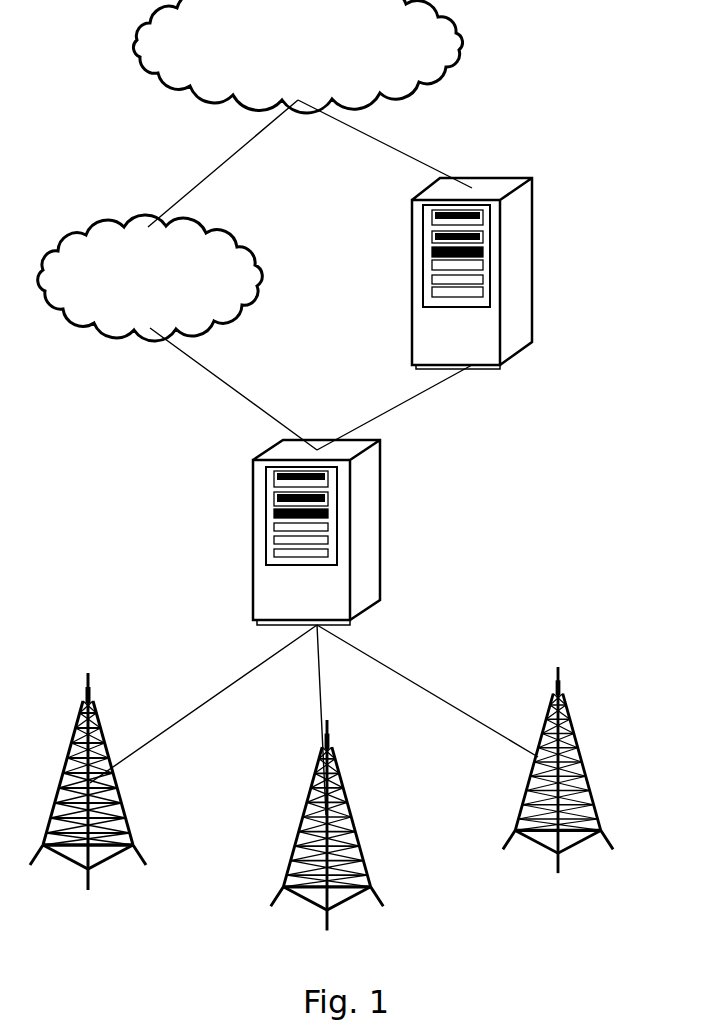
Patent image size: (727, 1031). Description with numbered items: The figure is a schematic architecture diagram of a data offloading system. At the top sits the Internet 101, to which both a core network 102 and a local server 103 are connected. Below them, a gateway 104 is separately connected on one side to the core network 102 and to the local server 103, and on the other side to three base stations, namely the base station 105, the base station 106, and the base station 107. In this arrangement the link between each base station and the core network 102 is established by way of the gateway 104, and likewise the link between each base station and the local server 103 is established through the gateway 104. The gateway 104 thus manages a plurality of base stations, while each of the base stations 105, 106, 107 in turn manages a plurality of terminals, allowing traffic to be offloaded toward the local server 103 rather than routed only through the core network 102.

The Internet 101 is at (435, 37).
The core network 102 is at (230, 280).
The local server 103 is at (515, 270).
The gateway 104 is at (365, 532).
The base station 105 is at (110, 822).
The base station 106 is at (352, 862).
The base station 107 is at (575, 795).